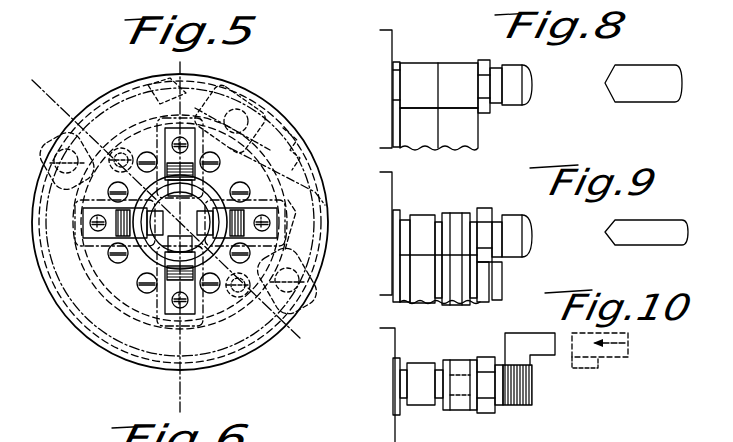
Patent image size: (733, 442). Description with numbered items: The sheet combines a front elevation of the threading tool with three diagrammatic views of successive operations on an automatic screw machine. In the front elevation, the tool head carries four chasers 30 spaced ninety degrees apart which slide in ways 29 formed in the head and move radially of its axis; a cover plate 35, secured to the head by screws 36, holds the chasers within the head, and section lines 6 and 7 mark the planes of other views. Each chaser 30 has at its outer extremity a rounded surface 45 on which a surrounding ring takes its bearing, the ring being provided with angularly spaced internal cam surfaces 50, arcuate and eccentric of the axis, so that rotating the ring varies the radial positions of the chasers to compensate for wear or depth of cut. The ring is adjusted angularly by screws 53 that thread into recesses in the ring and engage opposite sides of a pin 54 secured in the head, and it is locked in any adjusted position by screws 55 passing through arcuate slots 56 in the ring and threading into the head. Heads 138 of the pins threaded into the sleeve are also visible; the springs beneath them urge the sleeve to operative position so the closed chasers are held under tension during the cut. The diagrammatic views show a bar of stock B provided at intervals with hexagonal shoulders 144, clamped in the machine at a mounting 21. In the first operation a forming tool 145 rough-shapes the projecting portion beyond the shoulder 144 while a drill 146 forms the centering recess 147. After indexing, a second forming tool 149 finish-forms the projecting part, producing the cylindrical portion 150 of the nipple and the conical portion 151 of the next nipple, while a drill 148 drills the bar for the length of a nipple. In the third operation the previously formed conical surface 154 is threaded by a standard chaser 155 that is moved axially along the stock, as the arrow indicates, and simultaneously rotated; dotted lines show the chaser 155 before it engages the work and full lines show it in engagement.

In FIG. 5, the section line 6- 6 is at (70, 73).
In FIG. 5, the section line 7- 7 is at (70, 97).
In FIG. 5, the ways 29 is at (206, 296).
In FIG. 5, the chasers 30 is at (206, 186).
In FIG. 5, the cover plate 35 is at (147, 362).
In FIG. 5, the screws 36 is at (147, 280).
In FIG. 5, the rounded surface 45 is at (284, 218).
In FIG. 5, the internal cam surfaces 50 is at (322, 197).
In FIG. 5, the screws 53 is at (208, 90).
In FIG. 5, the pin 54 is at (247, 112).
In FIG. 5, the screws 55 is at (312, 273).
In FIG. 5, the arcuate slots 56 is at (281, 256).
In FIG. 5, the heads 138 is at (214, 331).
In FIG. 8, the base / mounting wall 21 is at (396, 58).
In FIG. 9, the base / mounting wall 21 is at (404, 175).
In FIG. 10, the base / mounting wall 21 is at (408, 335).
In FIG. 8, the bar of stock B is at (460, 70).
In FIG. 10, the bar of stock B is at (393, 398).
In FIG. 8, the hexagonal shoulders 144 is at (530, 51).
In FIG. 9, the hexagonal shoulders 144 is at (530, 203).
In FIG. 10, the hexagonal shoulders 144 is at (500, 345).
In FIG. 8, the forming tool 145 is at (480, 164).
In FIG. 8, the drill 146 is at (690, 122).
In FIG. 8, the centering recess 147 is at (580, 86).
In FIG. 9, the drill 148 is at (700, 260).
In FIG. 9, the forming tool 149 is at (480, 316).
In FIG. 9, the cylindrical portion 150 is at (482, 204).
In FIG. 10, the cylindrical portion 150 is at (460, 385).
In FIG. 9, the conical portion 151 is at (440, 205).
In FIG. 10, the conical portion 151 is at (445, 432).
In FIG. 8, the conical surface 154 is at (580, 65).
In FIG. 9, the conical surface 154 is at (555, 270).
In FIG. 10, the conical surface 154 is at (545, 432).
In FIG. 10, the chaser 155 is at (590, 321).